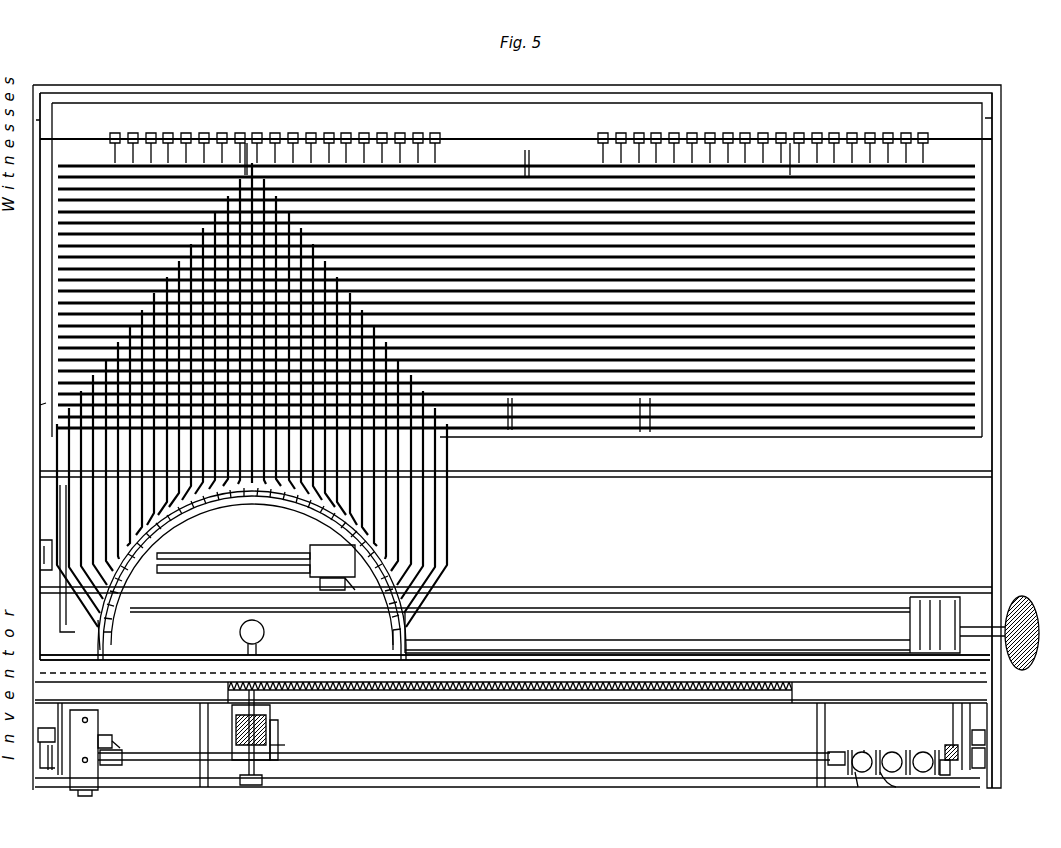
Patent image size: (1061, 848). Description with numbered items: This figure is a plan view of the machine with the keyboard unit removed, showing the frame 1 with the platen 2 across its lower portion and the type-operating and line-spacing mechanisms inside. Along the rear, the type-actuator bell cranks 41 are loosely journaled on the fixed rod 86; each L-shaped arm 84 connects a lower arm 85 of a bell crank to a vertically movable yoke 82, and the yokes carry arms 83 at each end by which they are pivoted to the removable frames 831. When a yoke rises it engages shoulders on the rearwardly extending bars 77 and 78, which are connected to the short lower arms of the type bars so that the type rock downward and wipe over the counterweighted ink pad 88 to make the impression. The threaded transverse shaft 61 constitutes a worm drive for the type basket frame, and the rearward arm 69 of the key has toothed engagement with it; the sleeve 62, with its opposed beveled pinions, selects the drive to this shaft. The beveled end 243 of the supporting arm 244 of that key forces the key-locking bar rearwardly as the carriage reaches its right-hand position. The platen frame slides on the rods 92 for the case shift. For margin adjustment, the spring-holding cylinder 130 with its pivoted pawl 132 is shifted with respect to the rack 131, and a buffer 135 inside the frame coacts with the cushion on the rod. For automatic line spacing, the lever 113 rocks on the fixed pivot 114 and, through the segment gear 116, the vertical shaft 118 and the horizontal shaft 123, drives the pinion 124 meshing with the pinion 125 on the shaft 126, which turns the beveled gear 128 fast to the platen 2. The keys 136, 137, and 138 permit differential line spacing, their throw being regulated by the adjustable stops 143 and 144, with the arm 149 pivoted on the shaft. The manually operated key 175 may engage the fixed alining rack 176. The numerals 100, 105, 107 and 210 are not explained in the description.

The frame 1 is at (517, 437).
The platen 2 is at (852, 625).
The type actuator 41 is at (428, 132).
The transverse shaft 61 is at (696, 703).
The sleeve 62 is at (270, 726).
The rearward arm 69 is at (232, 700).
The rearwardly extending bar 77 is at (436, 504).
The rearwardly extending bar 78 is at (430, 532).
The yoke 82 is at (527, 176).
The arm 83 is at (58, 322).
The L-shaped arm 84 is at (244, 140).
The lower arm 85 is at (112, 148).
The fixed rod 86 is at (516, 126).
The counterweighted ink pad 88 is at (240, 631).
The rod 92 is at (198, 738).
The rod 100 is at (245, 560).
The latch 105 is at (52, 772).
The bracket 107 is at (40, 745).
The lever 113 is at (62, 638).
The fixed pivot 114 is at (88, 720).
The segment gear 116 is at (110, 741).
The vertical shaft 118 is at (82, 762).
The horizontal shaft 123 is at (435, 760).
The pinion 124 is at (945, 776).
The pinion 125 is at (955, 762).
The shaft 126 is at (953, 718).
The beveled gear 128 is at (948, 632).
The spring-holding cylinder 130 is at (312, 556).
The rack 131 is at (200, 566).
The pivoted pawl 132 is at (335, 592).
The buffer 135 is at (42, 545).
The key 136 is at (862, 752).
The key 137 is at (892, 752).
The key 138 is at (923, 752).
The adjustable stop 143 is at (866, 750).
The adjustable stop 144 is at (857, 775).
The arm 149 is at (884, 780).
The manually operated key 175 is at (258, 786).
The fixed alining rack 176 is at (258, 660).
The carriage rail 210 is at (677, 477).
The beveled end 243 is at (256, 690).
The supporting arm 244 is at (282, 740).
The removable frame 831 is at (993, 120).